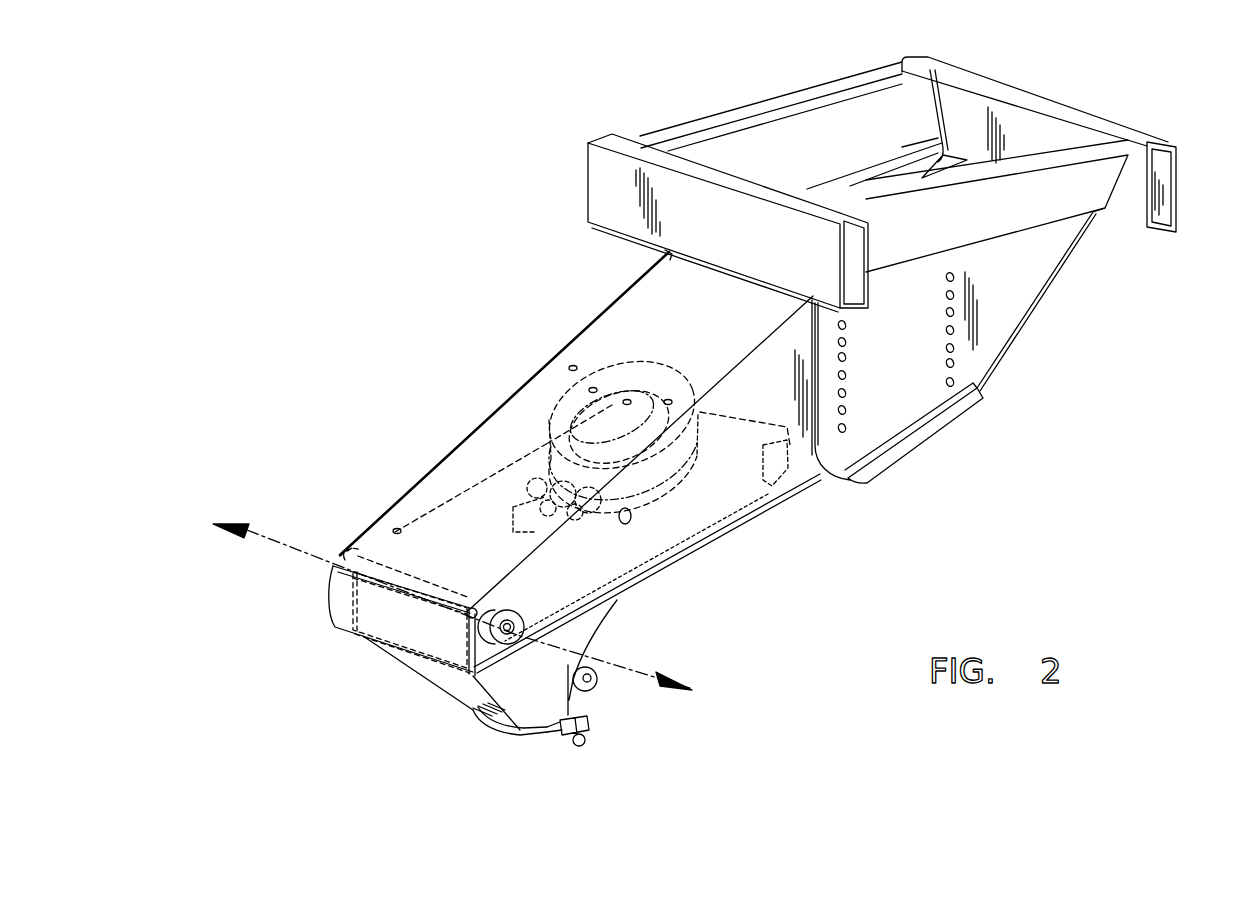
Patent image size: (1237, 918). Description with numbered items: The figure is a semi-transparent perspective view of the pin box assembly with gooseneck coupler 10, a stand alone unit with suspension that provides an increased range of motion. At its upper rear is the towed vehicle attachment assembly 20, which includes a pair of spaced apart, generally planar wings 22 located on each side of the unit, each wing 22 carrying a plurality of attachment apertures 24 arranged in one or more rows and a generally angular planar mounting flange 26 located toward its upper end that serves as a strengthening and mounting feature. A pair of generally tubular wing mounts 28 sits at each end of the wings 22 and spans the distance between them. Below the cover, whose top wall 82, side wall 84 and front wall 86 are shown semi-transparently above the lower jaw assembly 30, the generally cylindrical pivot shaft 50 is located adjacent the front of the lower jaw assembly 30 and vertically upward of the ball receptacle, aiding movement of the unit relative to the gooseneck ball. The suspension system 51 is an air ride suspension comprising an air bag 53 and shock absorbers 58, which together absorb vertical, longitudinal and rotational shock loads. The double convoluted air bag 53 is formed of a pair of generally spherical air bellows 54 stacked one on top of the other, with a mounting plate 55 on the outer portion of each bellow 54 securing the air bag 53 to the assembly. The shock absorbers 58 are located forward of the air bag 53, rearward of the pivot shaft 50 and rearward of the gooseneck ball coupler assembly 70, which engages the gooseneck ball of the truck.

The pin box assembly with gooseneck coupler 10 is at (432, 181).
The towed vehicle attachment assembly 20 is at (1044, 357).
The wing 22 is at (910, 182).
The attachment apertures 24 is at (848, 430).
The mounting flange 26 is at (740, 150).
The wing mount 28 is at (605, 195).
The lower jaw assembly 30 is at (352, 460).
The pivot shaft 50 is at (517, 633).
The suspension system 51 is at (600, 338).
The air bag 53 is at (514, 440).
The air bellows 54 is at (563, 412).
The mounting plates 55 is at (568, 393).
The shock absorber 58 is at (437, 512).
The gooseneck ball coupler assembly 70 is at (604, 716).
The top wall 82 is at (647, 317).
The side wall 84 is at (800, 452).
The front wall 86 is at (345, 605).